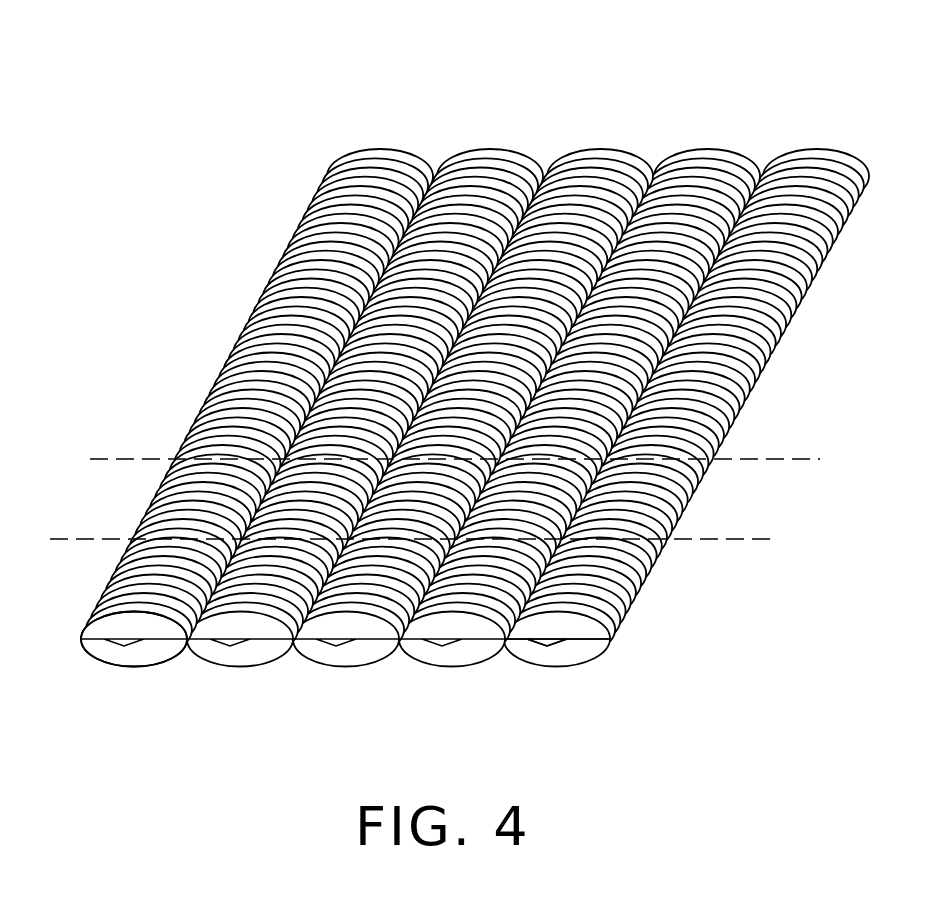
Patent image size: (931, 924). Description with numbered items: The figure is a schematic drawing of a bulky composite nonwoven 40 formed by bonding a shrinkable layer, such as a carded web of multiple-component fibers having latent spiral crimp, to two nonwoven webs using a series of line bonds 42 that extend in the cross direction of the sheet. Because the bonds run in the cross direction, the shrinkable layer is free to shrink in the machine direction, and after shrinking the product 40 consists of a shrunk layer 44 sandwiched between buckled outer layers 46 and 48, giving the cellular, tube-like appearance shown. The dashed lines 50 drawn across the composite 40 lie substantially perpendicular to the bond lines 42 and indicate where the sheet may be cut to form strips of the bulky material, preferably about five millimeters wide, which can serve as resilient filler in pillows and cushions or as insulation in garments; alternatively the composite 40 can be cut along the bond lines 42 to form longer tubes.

The bulky composite nonwoven 40 is at (278, 88).
The line bonds 42 is at (420, 216).
The shrunk layer 44 is at (558, 642).
The buckled outer layer 46 is at (115, 615).
The buckled outer layer 48 is at (112, 664).
The dashed lines 50 is at (748, 539).